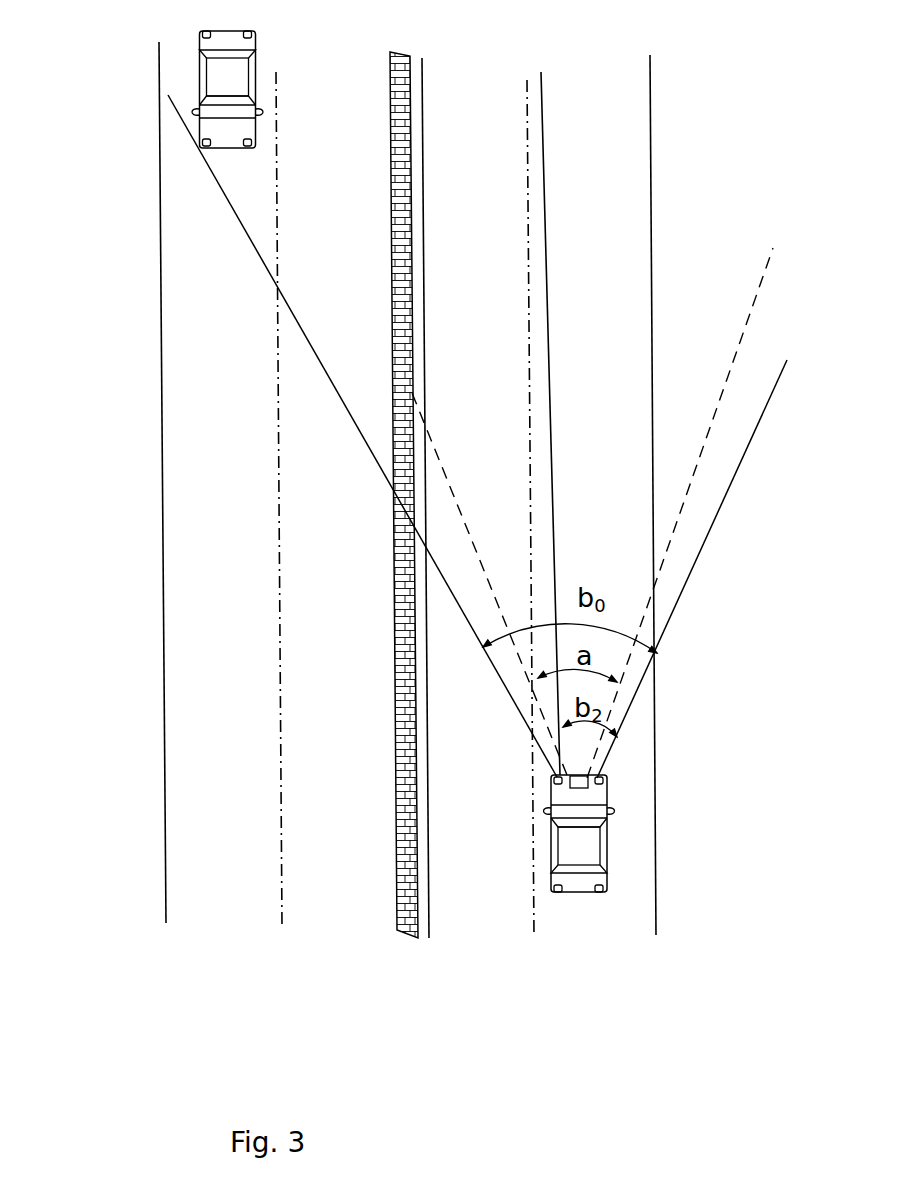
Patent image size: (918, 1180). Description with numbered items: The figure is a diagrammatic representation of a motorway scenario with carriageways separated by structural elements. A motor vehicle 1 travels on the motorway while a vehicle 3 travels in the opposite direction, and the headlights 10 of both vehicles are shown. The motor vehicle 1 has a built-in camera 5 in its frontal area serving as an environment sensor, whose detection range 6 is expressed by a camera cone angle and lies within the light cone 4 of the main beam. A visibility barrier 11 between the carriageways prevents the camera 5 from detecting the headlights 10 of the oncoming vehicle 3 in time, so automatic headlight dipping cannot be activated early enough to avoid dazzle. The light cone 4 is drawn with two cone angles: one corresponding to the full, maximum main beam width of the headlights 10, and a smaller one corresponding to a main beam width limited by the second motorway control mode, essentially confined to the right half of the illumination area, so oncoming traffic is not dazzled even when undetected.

The motor vehicle 1 is at (618, 852).
The vehicle 3 is at (188, 82).
The light cone 4 is at (695, 570).
The camera 5 is at (602, 800).
The detection range 6 is at (700, 460).
The headlights 10 is at (205, 147).
The visibility barrier 11 is at (412, 950).